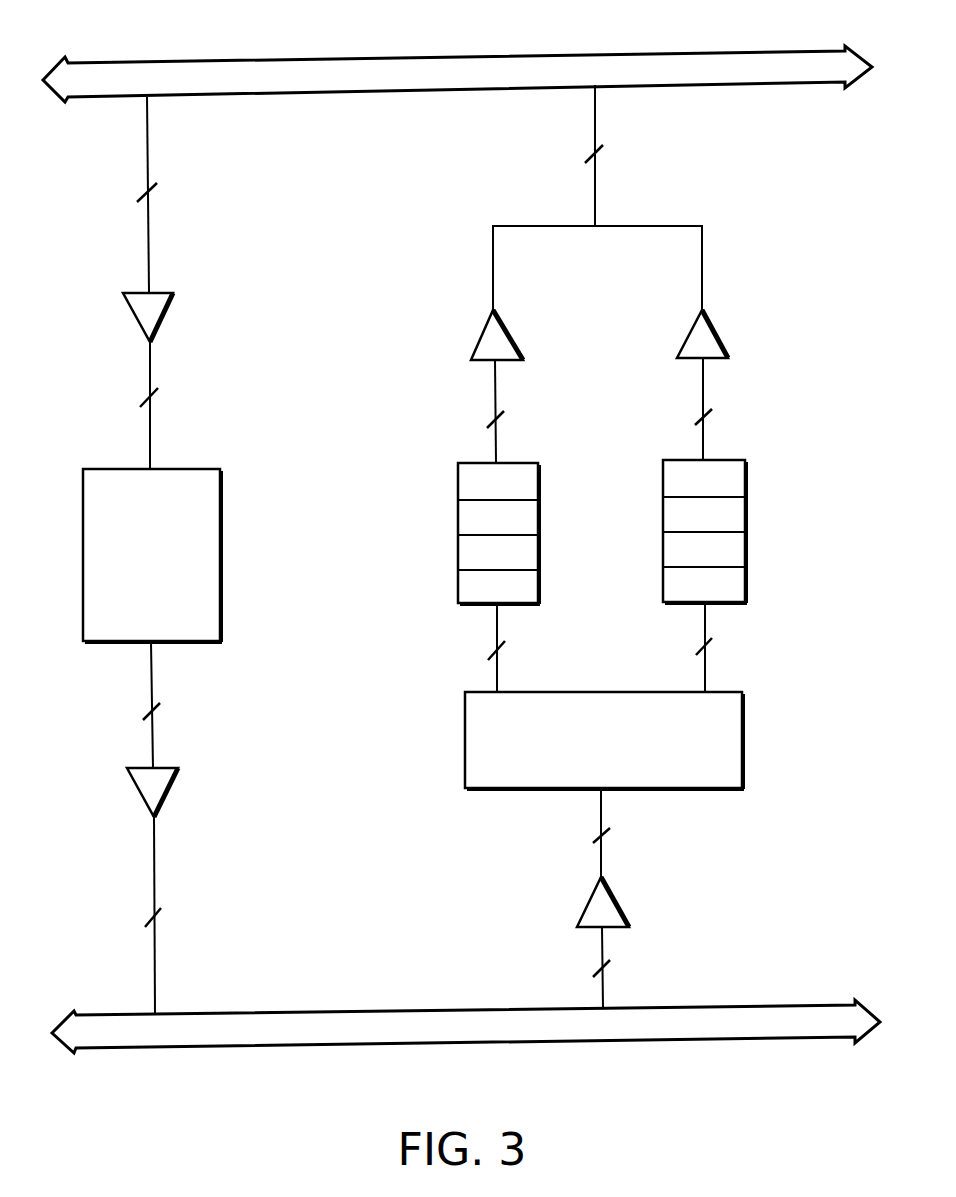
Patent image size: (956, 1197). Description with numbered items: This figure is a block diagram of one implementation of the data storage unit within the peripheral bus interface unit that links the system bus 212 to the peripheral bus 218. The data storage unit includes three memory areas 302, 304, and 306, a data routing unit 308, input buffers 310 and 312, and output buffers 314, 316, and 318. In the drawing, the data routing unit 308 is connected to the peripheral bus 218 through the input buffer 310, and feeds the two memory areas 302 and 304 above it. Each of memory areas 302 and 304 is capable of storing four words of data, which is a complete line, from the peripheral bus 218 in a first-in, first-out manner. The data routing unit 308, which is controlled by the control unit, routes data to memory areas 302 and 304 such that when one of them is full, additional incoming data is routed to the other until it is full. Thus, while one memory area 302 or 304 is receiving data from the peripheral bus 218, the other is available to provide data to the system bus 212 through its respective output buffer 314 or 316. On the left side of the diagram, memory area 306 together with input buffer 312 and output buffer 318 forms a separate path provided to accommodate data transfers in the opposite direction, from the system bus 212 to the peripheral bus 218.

The system bus 212 is at (708, 52).
The peripheral bus 218 is at (760, 1007).
The memory area 302 is at (748, 478).
The memory area 304 is at (540, 480).
The memory area 306 is at (222, 552).
The data routing unit 308 is at (465, 745).
The input buffer 310 is at (618, 900).
The input buffer 312 is at (163, 320).
The output buffer 314 is at (718, 323).
The output buffer 316 is at (510, 330).
The output buffer 318 is at (168, 795).